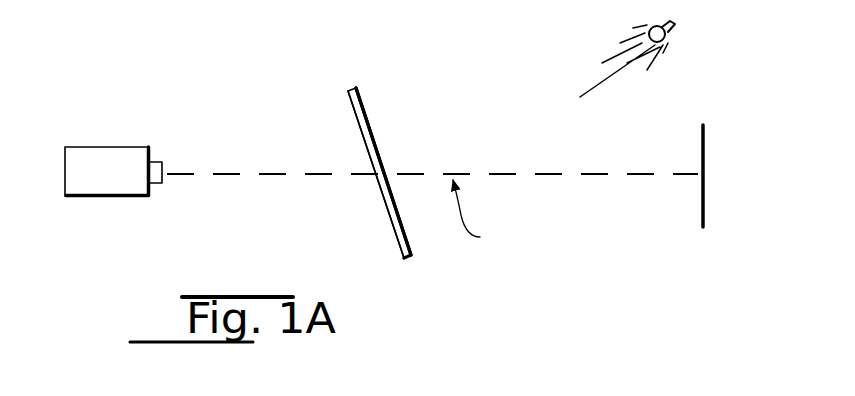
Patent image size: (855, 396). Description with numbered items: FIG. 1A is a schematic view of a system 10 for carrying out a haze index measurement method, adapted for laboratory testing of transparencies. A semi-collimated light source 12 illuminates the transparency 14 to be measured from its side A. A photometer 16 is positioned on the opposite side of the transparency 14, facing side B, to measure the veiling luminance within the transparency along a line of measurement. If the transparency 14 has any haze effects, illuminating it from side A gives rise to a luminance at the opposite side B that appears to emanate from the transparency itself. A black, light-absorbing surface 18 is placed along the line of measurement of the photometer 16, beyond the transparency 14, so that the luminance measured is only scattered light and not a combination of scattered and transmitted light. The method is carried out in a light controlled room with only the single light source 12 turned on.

The system 10 is at (153, 100).
The semi-collimated light source 12 is at (675, 34).
The transparency 14 is at (350, 86).
The photometer 16 is at (63, 184).
The black, light-absorbing surface 18 is at (706, 146).
The side A of transparency A is at (361, 102).
The side B of transparency B is at (393, 227).